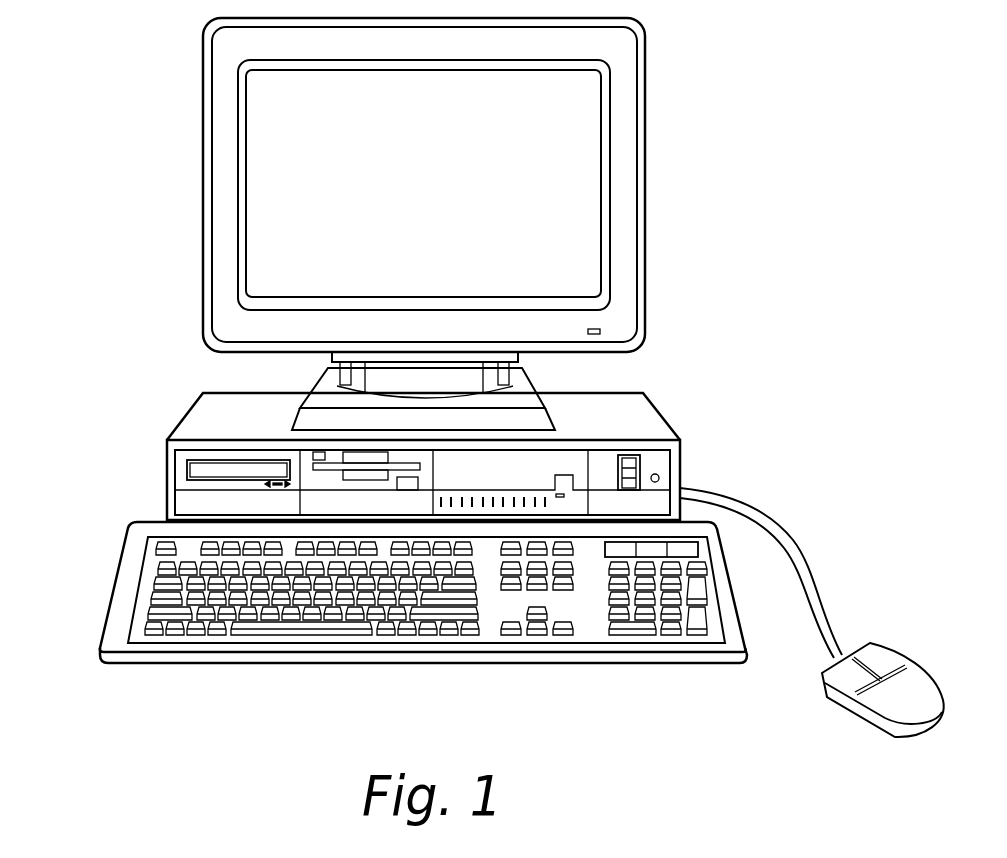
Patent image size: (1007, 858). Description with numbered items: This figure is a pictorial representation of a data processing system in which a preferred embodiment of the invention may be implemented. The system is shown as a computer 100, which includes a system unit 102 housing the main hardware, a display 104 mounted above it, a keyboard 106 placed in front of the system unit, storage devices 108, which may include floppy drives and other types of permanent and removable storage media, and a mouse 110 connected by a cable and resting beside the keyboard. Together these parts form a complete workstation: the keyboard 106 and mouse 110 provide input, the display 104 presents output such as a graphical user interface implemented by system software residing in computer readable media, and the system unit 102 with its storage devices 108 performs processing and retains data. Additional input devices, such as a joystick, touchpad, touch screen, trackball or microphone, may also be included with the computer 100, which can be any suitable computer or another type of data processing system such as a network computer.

The computer 100 is at (98, 144).
The system unit 102 is at (167, 468).
The display 104 is at (645, 187).
The keyboard 106 is at (160, 663).
The storage devices 108 is at (687, 458).
The mouse 110 is at (848, 713).